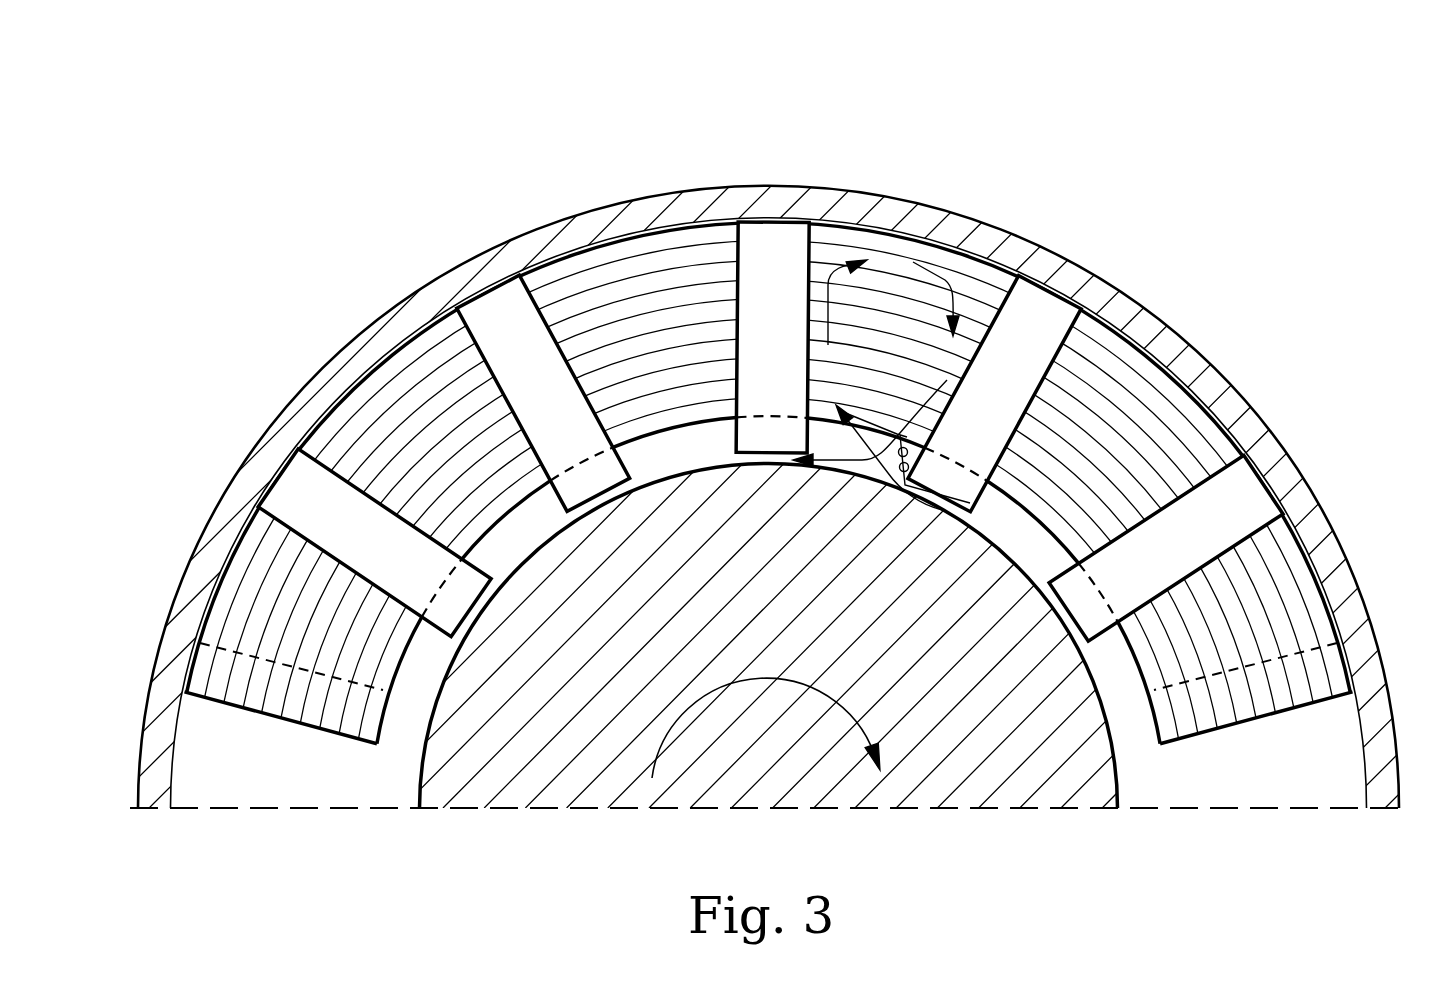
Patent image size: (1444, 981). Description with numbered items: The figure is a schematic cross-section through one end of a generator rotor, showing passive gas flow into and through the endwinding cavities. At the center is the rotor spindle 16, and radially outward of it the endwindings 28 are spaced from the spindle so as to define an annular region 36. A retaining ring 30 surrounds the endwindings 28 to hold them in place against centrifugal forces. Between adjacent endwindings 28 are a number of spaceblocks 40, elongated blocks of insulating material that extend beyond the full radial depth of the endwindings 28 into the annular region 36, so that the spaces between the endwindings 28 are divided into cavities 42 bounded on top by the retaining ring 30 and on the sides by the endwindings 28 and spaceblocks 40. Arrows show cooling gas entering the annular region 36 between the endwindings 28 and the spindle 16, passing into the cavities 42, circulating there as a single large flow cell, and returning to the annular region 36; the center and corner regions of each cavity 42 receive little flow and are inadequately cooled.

The rotor spindle 16 is at (905, 787).
The endwindings 28 is at (1275, 745).
The retaining ring 30 is at (1366, 650).
The annular region 36 is at (682, 455).
The spaceblocks 40 is at (772, 245).
The cavities 42 is at (1122, 428).